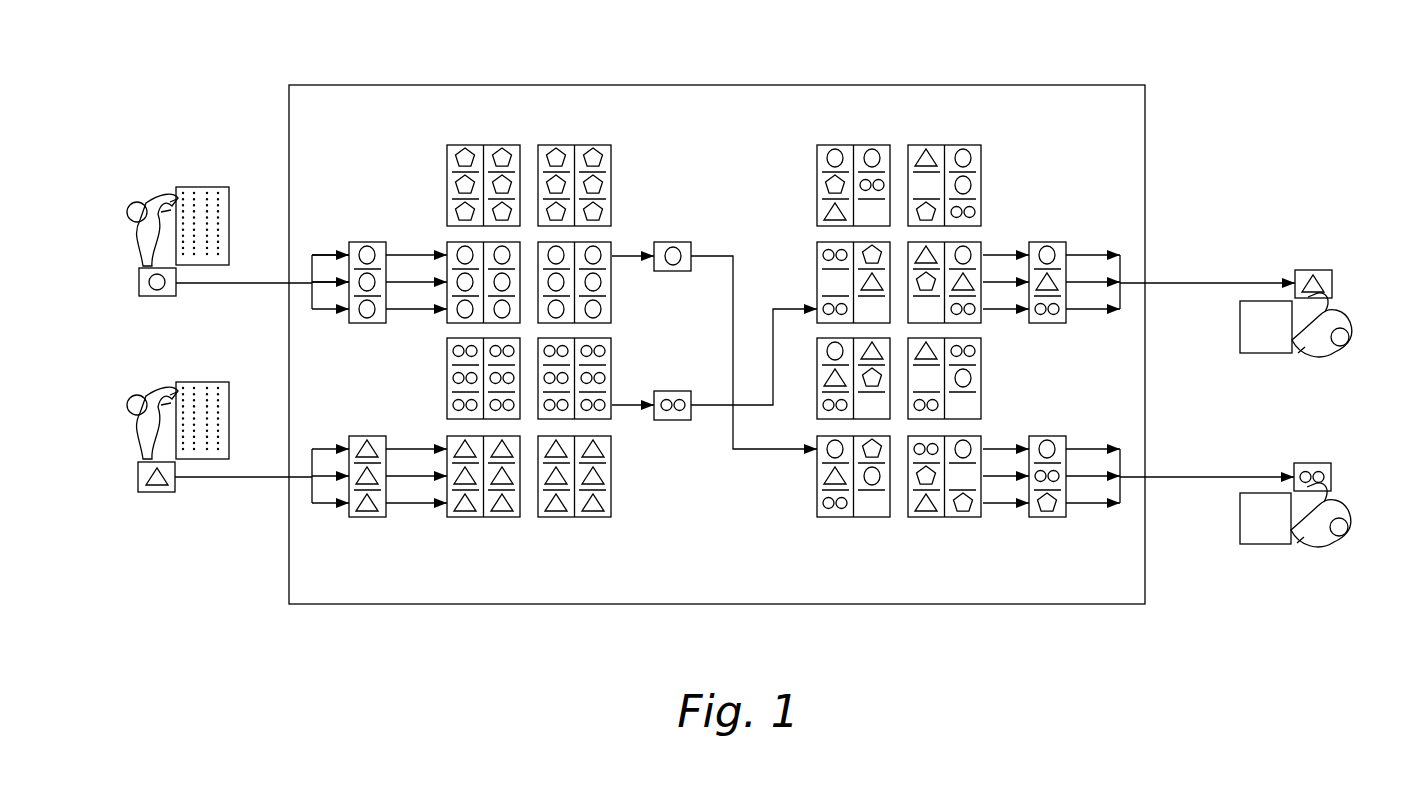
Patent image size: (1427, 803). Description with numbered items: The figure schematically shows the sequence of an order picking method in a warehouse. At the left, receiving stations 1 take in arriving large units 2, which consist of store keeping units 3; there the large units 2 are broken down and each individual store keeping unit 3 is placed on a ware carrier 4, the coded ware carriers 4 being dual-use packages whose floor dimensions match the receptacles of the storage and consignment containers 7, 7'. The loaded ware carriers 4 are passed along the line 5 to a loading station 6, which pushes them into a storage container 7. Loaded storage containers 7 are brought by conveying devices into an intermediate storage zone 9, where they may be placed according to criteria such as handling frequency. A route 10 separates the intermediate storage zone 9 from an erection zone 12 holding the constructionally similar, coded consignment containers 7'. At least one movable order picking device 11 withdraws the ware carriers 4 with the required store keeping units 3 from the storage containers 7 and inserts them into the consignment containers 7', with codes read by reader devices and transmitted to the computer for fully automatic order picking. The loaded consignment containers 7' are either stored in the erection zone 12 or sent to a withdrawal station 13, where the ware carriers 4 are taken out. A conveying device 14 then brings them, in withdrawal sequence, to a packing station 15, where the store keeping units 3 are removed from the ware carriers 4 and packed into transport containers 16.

The receiving station 1 is at (130, 317).
The large unit 2 is at (196, 187).
The store keeping unit 3 is at (139, 283).
The ware carrier 4 is at (138, 275).
The input line 5 is at (252, 283).
The loading station 6 is at (347, 236).
The storage container 7 is at (453, 349).
The consignment container 7' is at (862, 404).
The intermediate storage zone 9 is at (525, 532).
The route 10 is at (712, 435).
The order picking device 11 is at (628, 256).
The erection zone 12 is at (888, 537).
The withdrawal station 13 is at (1051, 222).
The conveying device 14 is at (1185, 285).
The packing station 15 is at (1325, 244).
The transport container 16 is at (1240, 331).